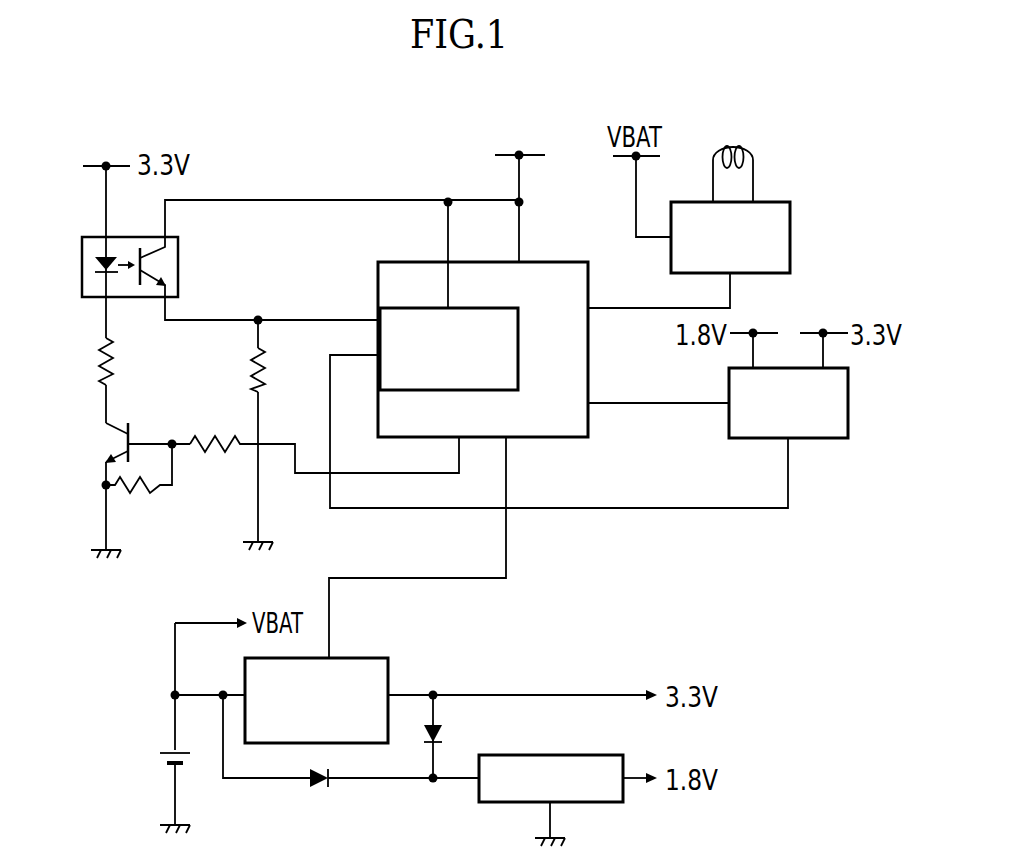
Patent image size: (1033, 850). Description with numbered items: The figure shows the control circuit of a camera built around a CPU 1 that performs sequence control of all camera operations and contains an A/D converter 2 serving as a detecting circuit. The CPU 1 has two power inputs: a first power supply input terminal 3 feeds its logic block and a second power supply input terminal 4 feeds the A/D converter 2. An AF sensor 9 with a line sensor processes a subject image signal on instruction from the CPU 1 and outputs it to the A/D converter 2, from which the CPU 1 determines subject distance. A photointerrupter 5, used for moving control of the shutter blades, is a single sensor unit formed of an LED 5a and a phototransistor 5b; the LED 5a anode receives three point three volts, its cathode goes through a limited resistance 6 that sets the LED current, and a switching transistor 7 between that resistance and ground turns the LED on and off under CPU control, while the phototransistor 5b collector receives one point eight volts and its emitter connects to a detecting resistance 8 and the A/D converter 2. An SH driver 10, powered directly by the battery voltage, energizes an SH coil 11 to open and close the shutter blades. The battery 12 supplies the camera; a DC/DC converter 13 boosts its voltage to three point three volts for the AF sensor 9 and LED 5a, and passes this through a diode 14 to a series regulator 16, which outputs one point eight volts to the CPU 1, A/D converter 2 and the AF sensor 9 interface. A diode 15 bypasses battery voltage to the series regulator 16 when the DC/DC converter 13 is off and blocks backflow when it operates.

The CPU 1 is at (588, 273).
The A/D converter 2 is at (382, 313).
The first power supply input terminal 3 is at (520, 261).
The second power supply input terminal 4 is at (448, 262).
The photointerrupter 5 is at (134, 298).
The LED 5a is at (82, 258).
The phototransistor 5b is at (178, 258).
The limited resistance 6 is at (94, 359).
The switching transistor 7 is at (110, 443).
The detecting resistance 8 is at (250, 372).
The AF sensor 9 is at (848, 402).
The SH driver 10 is at (790, 239).
The SH coil 11 is at (738, 146).
The battery 12 is at (163, 760).
The DC/DC converter 13 is at (362, 658).
The diode 14 is at (449, 729).
The diode 15 is at (327, 780).
The series regulator 16 is at (508, 803).